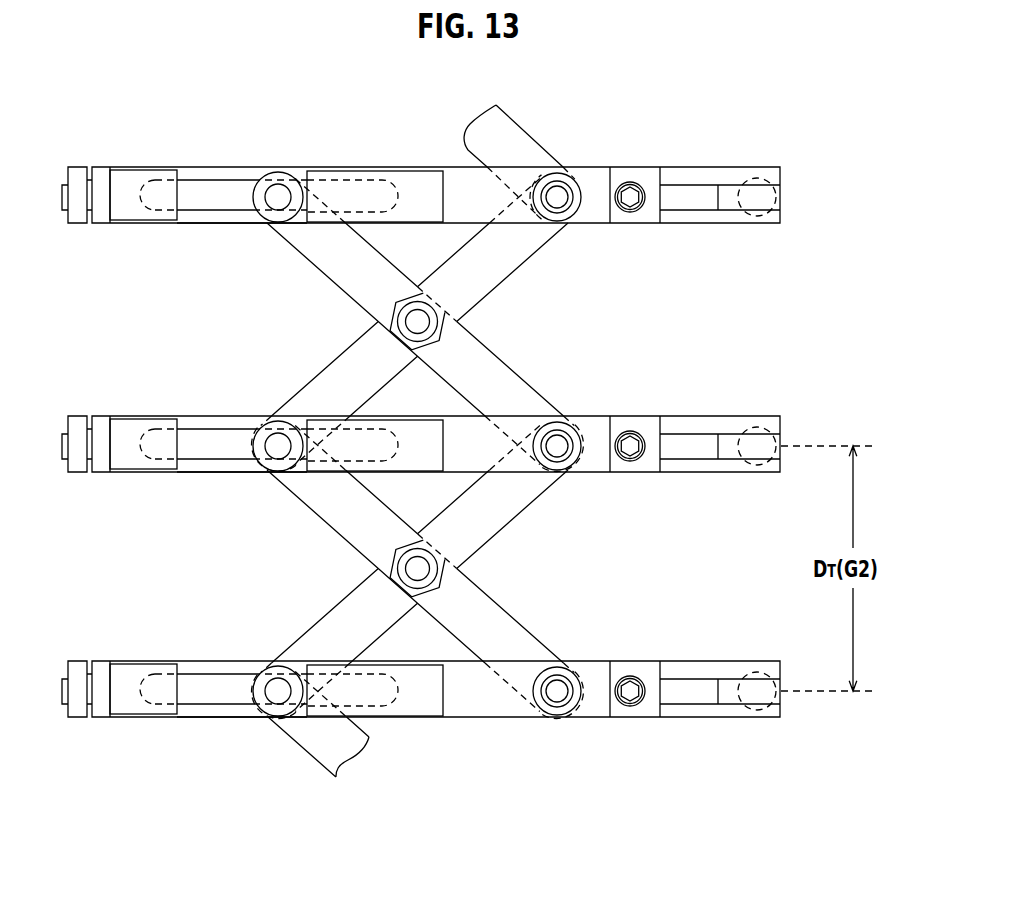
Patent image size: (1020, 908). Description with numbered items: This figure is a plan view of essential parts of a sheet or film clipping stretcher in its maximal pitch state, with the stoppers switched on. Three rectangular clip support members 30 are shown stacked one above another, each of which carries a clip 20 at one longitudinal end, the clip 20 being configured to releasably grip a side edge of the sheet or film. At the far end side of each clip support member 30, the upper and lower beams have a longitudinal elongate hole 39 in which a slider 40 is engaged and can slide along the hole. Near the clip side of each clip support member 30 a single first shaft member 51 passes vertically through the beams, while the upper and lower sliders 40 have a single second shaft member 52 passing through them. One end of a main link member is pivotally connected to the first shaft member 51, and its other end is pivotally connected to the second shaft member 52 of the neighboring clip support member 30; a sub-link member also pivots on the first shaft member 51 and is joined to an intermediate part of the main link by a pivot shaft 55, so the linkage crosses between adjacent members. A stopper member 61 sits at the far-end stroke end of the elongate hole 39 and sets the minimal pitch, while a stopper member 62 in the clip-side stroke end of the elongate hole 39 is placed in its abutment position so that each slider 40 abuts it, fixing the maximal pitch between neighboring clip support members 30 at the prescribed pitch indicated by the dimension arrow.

The clip 20 is at (729, 242).
The clip support member 30 is at (594, 155).
The elongate hole 39 is at (217, 182).
The slider 40 is at (235, 225).
The first shaft member 51 is at (563, 201).
The second shaft member 52 is at (276, 184).
The pivot shaft 55 is at (410, 322).
The stopper member 61 is at (127, 182).
The stopper member 62 is at (417, 182).